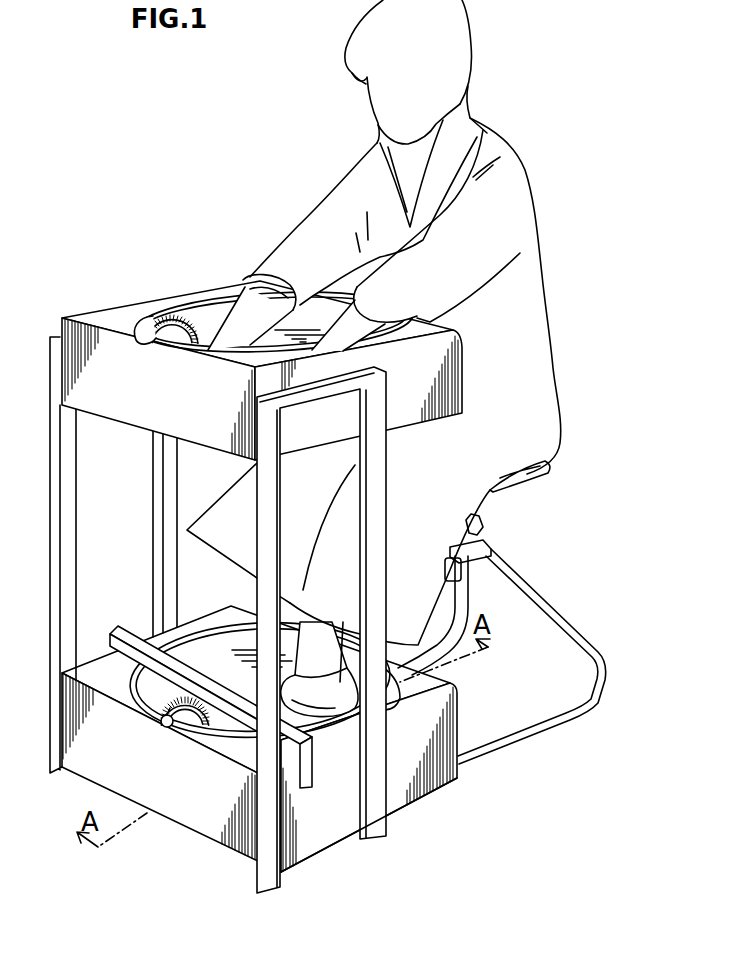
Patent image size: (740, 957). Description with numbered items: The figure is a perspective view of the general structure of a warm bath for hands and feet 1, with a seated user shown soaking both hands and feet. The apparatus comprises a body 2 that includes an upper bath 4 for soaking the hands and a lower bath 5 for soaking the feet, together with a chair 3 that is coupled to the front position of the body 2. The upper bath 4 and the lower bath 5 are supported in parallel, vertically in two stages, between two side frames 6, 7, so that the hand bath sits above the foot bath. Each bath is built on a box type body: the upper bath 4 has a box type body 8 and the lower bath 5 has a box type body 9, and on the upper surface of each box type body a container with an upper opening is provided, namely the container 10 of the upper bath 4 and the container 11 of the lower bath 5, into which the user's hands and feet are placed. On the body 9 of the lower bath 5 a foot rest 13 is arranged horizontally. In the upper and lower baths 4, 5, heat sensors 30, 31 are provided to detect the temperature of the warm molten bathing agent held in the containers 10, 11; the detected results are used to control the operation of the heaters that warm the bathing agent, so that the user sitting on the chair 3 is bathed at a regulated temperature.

The warm bath for hands and feet 1 is at (443, 672).
The body 2 is at (415, 801).
The chair 3 is at (494, 762).
The upper bath 4 is at (251, 332).
The lower bath 5 is at (250, 763).
The side frame 6 is at (77, 490).
The side frame 7 is at (257, 598).
The box type body 8 is at (145, 317).
The box type body 9 is at (152, 783).
The container 10 is at (201, 298).
The container 11 is at (201, 733).
The foot rest 13 is at (126, 630).
The heat sensor 30 is at (138, 322).
The heat sensor 31 is at (160, 713).